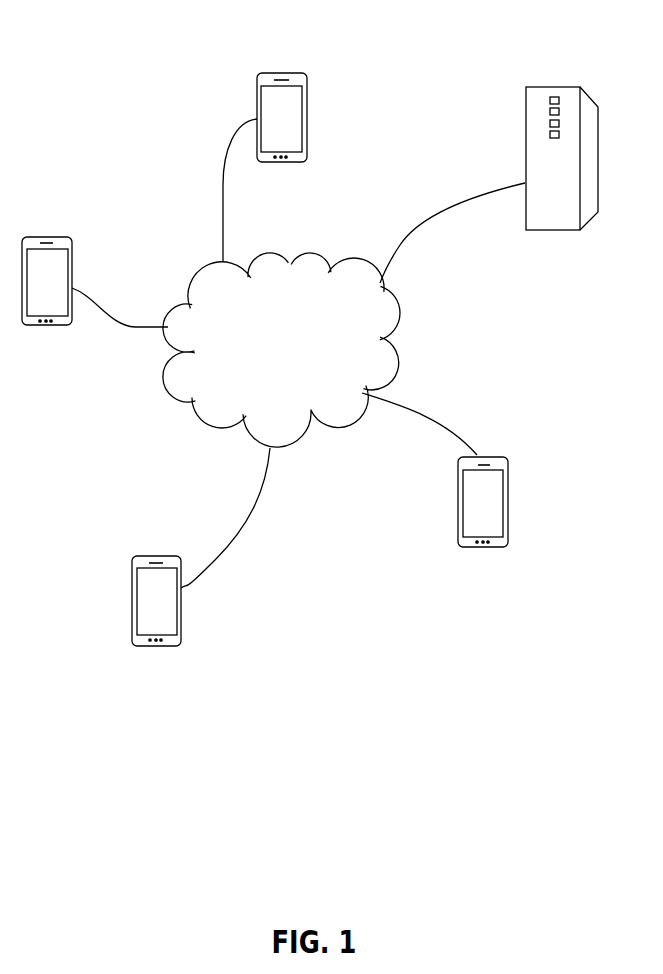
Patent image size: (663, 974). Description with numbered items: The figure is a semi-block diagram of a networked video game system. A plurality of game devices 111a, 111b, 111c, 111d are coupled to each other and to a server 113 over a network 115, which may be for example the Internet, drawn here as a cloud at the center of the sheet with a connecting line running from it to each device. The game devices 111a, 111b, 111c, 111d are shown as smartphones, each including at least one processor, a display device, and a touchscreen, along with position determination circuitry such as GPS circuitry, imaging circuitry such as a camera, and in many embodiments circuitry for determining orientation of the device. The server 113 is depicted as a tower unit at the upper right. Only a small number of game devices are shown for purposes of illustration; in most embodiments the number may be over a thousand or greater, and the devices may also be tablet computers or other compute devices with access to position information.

The game device 111a is at (283, 72).
The game device 111b is at (47, 233).
The game device 111c is at (132, 600).
The game device 111d is at (508, 500).
The server 113 is at (552, 85).
The network 115 is at (397, 318).